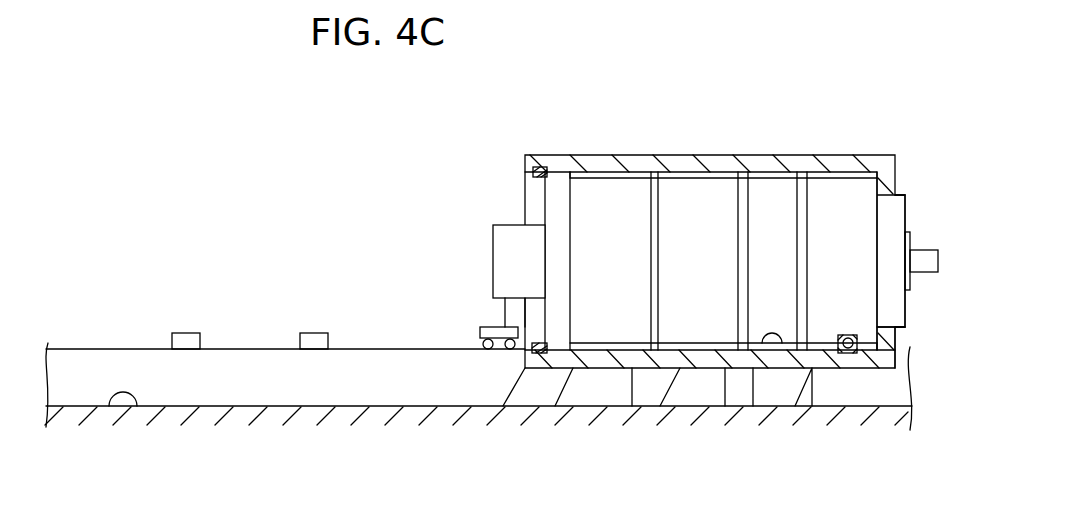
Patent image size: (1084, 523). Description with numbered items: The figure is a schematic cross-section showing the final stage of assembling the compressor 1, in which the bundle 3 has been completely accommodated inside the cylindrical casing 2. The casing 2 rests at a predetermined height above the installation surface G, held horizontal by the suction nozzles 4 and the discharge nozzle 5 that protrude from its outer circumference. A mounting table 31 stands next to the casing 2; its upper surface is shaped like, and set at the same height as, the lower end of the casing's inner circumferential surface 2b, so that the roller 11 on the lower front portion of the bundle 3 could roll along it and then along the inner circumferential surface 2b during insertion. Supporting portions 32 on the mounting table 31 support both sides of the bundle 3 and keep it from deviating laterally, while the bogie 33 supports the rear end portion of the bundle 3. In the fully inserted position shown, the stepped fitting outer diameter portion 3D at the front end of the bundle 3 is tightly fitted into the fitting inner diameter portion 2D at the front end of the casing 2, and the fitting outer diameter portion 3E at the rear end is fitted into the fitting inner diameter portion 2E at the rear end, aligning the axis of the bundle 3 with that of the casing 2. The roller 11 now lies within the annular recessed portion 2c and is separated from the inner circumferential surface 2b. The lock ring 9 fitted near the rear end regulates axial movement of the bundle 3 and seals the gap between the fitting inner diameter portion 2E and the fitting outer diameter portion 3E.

The compressor 1 is at (710, 132).
The casing 2 is at (798, 152).
The bundle 3 is at (628, 168).
The fitting inner diameter portion 2E is at (557, 177).
The fitting outer diameter portion 3E is at (558, 202).
The lock ring 9 is at (546, 172).
The fitting outer diameter portion 3D is at (885, 228).
The fitting inner diameter portion 2D is at (887, 196).
The recessed portion 2c is at (865, 343).
The bogie 33 is at (493, 313).
The installation surface G is at (137, 406).
The supporting portions 32 is at (187, 341).
The mounting table 31 is at (343, 385).
The suction nozzles 4 is at (603, 393).
The inner circumferential surface 2b is at (776, 341).
The discharge nozzle 5 is at (830, 392).
The rollers 11 is at (853, 353).